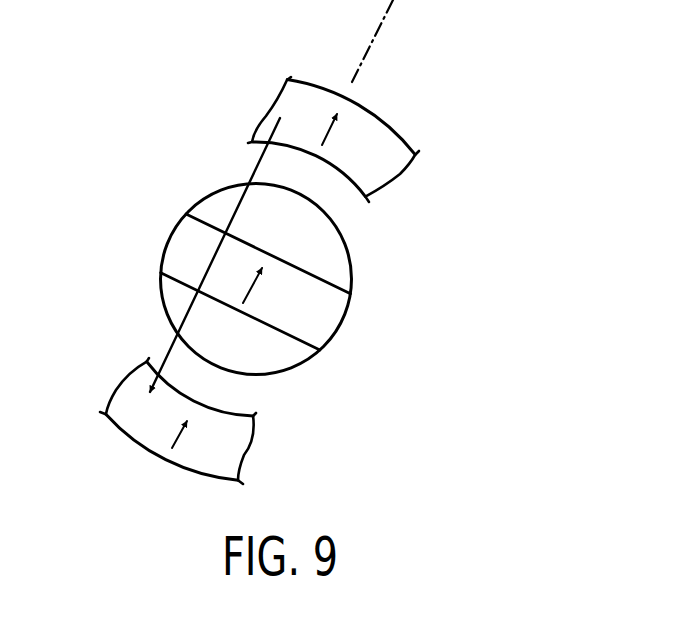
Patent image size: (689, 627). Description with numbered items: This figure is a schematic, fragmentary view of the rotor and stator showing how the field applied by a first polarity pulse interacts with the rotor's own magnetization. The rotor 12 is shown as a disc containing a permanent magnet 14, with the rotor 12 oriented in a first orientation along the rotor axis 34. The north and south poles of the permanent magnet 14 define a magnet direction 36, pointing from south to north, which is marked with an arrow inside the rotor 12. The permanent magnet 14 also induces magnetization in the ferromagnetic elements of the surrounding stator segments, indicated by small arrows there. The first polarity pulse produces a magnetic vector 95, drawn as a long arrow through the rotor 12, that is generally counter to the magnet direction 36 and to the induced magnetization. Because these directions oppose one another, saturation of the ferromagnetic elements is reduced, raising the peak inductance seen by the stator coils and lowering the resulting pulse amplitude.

The rotor 12 is at (348, 250).
The permanent magnet 14 is at (323, 318).
The magnetic axis 34 is at (373, 38).
The magnet direction 36 is at (263, 318).
The magnetic vector 95 is at (170, 238).